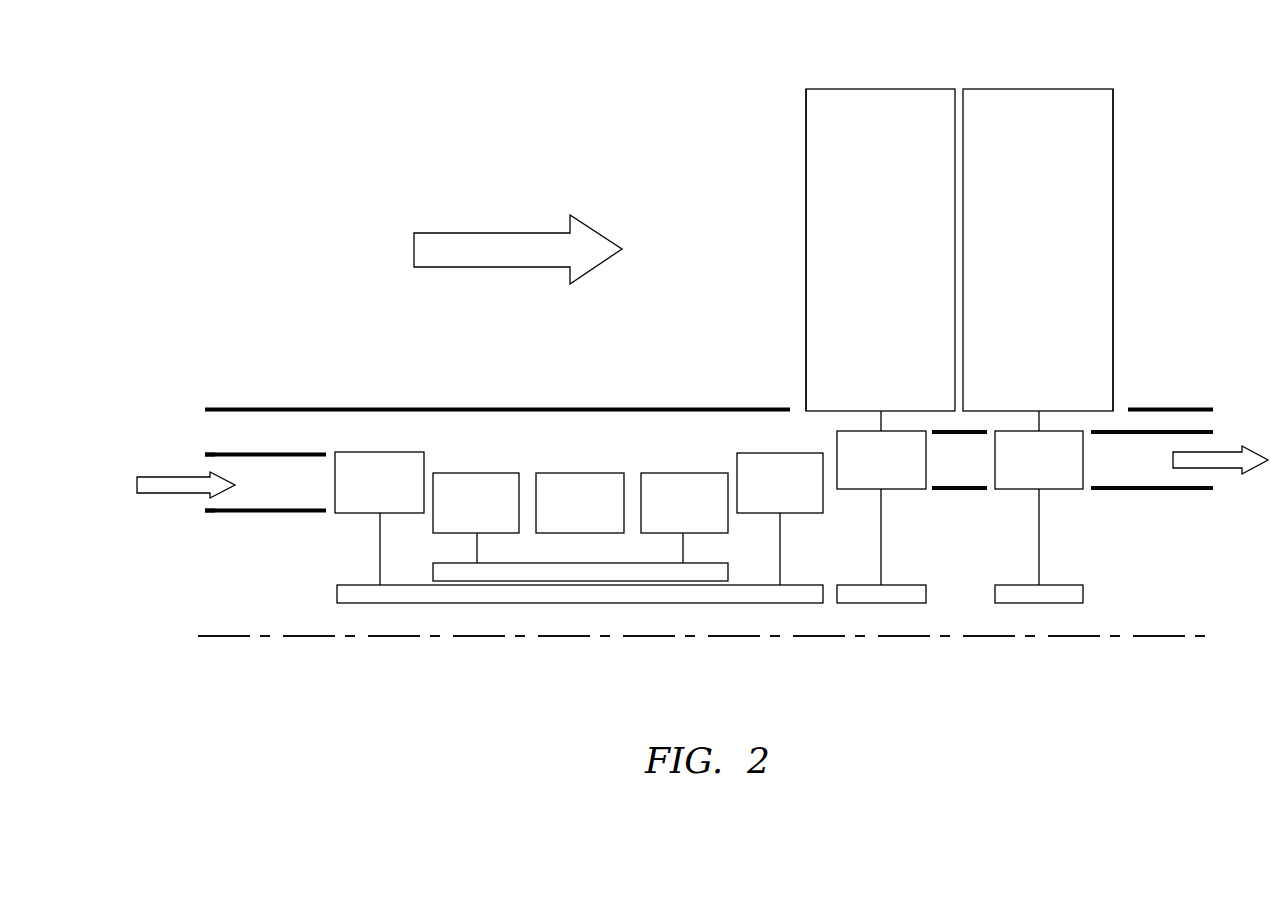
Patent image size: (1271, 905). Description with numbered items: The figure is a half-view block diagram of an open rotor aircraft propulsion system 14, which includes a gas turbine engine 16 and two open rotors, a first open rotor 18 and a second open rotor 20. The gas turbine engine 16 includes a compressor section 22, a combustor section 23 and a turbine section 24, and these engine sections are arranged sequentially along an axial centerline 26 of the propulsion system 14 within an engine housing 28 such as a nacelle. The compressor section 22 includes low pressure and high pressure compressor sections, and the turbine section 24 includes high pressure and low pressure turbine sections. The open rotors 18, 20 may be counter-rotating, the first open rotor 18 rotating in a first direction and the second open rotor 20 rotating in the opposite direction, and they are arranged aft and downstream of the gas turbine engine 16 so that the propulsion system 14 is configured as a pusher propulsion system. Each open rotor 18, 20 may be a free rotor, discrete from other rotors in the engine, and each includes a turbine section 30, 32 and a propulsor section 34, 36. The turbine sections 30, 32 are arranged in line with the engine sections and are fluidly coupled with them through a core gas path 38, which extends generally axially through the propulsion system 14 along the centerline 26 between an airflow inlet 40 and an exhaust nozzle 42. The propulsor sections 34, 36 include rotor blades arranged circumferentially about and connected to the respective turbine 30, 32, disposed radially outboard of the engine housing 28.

The propulsion system 14 is at (255, 116).
The gas turbine engine 16 is at (290, 630).
The first open rotor 18 is at (890, 80).
The second open rotor 20 is at (1054, 79).
The compressor section 22 is at (397, 428).
The combustor section 23 is at (574, 452).
The turbine section 24 is at (718, 432).
The axial centerline 26 is at (1153, 637).
The engine housing 28 is at (251, 407).
The turbine section 30 is at (911, 506).
The turbine section 32 is at (1072, 506).
The propulsor section 34 is at (797, 258).
The propulsor section 36 is at (1123, 238).
The core gas path 38 is at (296, 496).
The airflow inlet 40 is at (205, 512).
The exhaust nozzle 42 is at (1213, 489).